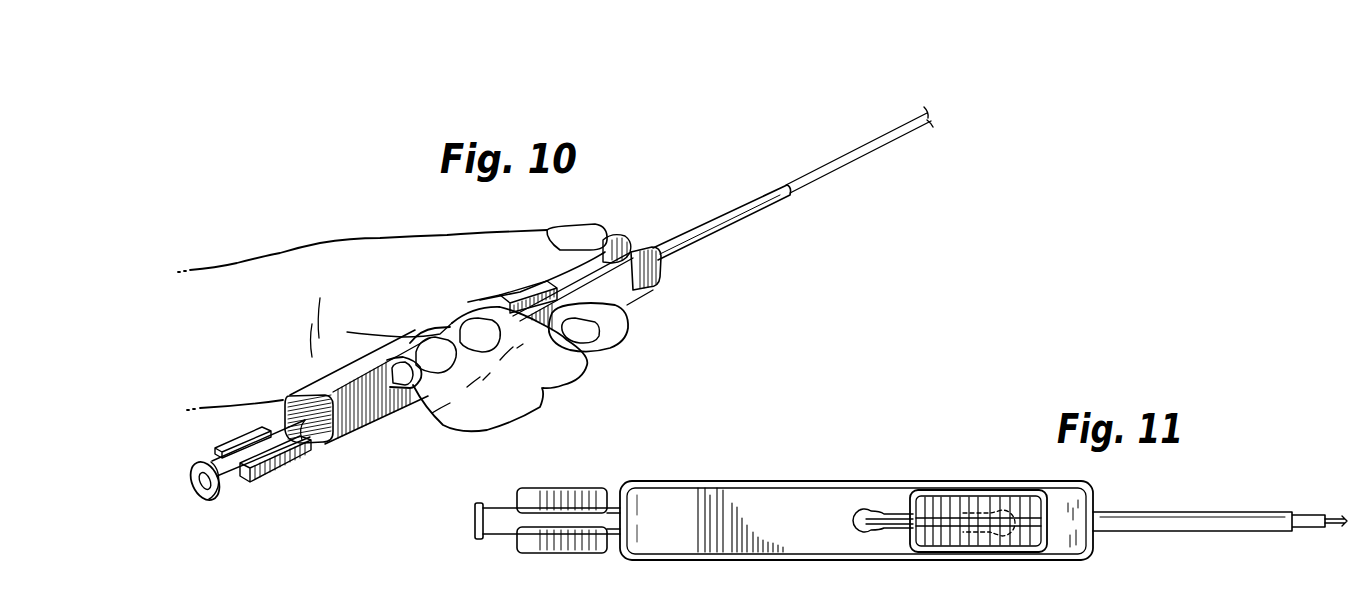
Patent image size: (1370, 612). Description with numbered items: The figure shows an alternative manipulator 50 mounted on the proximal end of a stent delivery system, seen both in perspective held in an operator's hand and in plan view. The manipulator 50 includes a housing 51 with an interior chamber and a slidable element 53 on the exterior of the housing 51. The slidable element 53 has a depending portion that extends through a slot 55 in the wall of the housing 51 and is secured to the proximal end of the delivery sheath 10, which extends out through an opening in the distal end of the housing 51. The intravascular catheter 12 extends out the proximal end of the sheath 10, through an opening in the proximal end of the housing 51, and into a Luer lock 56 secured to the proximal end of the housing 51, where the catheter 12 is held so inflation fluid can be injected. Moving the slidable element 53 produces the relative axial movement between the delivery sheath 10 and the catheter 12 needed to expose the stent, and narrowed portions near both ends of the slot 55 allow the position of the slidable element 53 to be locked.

In FIG. 10, the delivery sheath 10 is at (840, 165).
In FIG. 11, the delivery sheath 10 is at (1310, 513).
In FIG. 11, the intravascular catheter 12 is at (1330, 532).
In FIG. 10, the alternative manipulator 50 is at (403, 427).
In FIG. 11, the alternative manipulator 50 is at (752, 475).
In FIG. 10, the housing 51 is at (637, 287).
In FIG. 10, the slidable element 53 is at (620, 238).
In FIG. 11, the slidable element 53 is at (980, 492).
In FIG. 11, the slot 55 is at (903, 530).
In FIG. 10, the Luer lock 56 is at (270, 478).
In FIG. 11, the Luer lock 56 is at (515, 537).